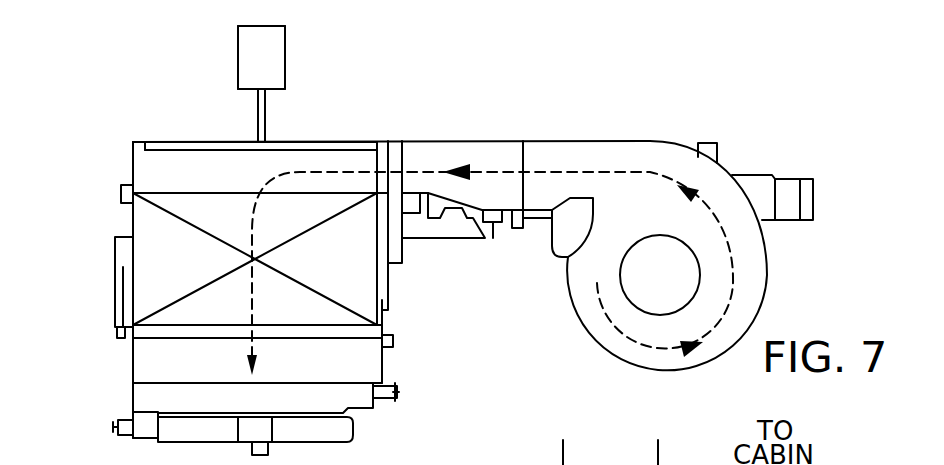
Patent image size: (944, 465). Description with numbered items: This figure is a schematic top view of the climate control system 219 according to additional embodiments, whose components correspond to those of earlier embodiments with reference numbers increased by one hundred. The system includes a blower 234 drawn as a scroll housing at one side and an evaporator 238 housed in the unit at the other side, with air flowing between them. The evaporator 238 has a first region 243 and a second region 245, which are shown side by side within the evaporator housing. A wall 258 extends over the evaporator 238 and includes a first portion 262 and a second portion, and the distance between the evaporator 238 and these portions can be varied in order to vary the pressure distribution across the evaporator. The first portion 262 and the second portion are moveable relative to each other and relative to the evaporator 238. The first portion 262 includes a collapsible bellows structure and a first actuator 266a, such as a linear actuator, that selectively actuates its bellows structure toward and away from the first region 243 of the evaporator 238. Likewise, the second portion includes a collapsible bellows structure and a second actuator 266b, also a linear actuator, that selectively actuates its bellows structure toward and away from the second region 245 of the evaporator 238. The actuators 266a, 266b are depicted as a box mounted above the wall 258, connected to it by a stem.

The climate control system 219 is at (96, 144).
The wall 258 is at (337, 132).
The first portion 262 is at (172, 142).
The first actuator 266a is at (285, 60).
The second actuator 266b is at (261, 57).
The second region 245 is at (200, 273).
The first region 243 is at (355, 273).
The evaporator 238 is at (150, 292).
The blower 234 is at (673, 275).